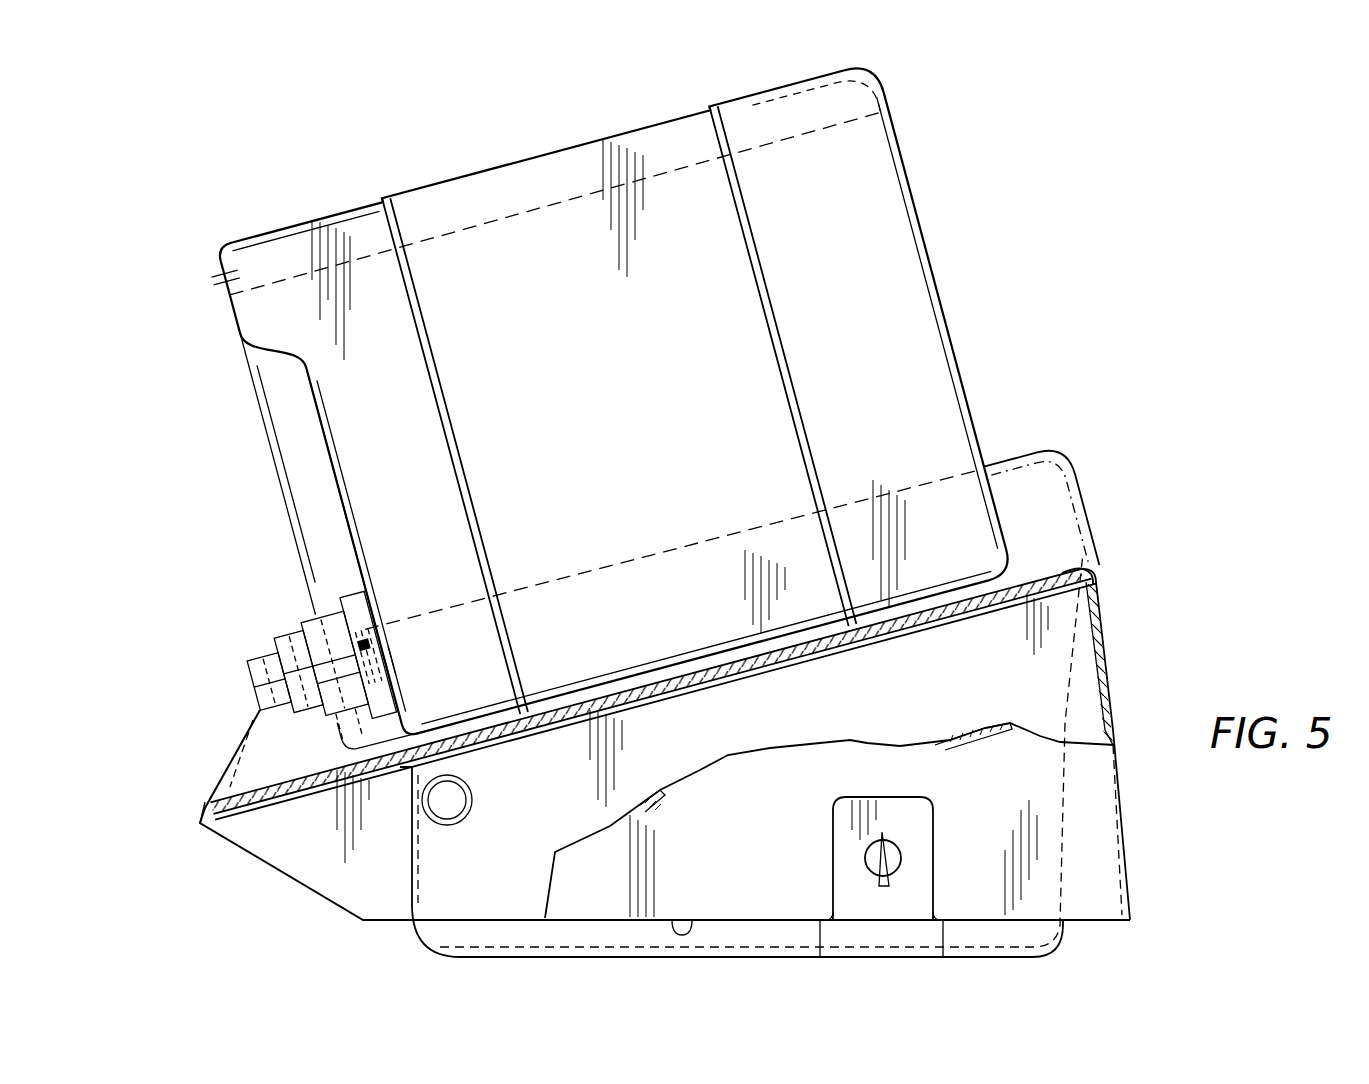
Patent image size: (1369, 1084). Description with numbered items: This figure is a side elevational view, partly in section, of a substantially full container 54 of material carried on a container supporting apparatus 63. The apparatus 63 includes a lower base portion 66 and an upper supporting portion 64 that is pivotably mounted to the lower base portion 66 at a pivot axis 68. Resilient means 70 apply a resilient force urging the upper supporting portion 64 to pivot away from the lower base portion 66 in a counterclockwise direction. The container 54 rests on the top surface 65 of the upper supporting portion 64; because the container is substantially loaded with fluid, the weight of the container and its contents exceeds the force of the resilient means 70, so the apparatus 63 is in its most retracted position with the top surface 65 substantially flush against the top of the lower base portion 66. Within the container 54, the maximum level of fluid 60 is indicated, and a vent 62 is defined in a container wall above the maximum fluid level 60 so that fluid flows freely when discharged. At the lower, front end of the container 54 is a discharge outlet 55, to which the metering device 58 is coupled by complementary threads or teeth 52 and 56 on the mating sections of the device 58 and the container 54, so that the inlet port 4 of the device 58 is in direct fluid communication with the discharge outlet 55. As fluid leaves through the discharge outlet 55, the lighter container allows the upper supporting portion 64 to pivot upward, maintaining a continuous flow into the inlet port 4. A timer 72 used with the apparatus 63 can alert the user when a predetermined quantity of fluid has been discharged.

The inlet port 4 is at (389, 660).
The complementary threads or teeth 52 is at (402, 690).
The container 54 is at (600, 345).
The discharge outlet 55 is at (388, 644).
The complementary threads or teeth 56 is at (378, 640).
The device 58 is at (244, 686).
The maximum level of fluid 60 is at (512, 215).
The vent 62 is at (228, 275).
The apparatus 63 is at (1119, 629).
The upper supporting portion 64 is at (1112, 706).
The top surface 65 is at (1048, 568).
The lower base portion 66 is at (1048, 948).
The pivot axis 68 is at (468, 796).
The resilient means 70 is at (697, 918).
The timer 72 is at (905, 855).